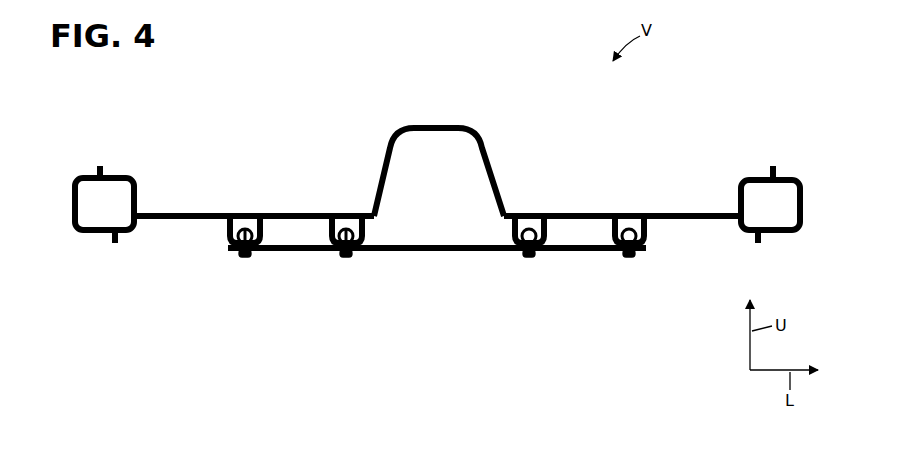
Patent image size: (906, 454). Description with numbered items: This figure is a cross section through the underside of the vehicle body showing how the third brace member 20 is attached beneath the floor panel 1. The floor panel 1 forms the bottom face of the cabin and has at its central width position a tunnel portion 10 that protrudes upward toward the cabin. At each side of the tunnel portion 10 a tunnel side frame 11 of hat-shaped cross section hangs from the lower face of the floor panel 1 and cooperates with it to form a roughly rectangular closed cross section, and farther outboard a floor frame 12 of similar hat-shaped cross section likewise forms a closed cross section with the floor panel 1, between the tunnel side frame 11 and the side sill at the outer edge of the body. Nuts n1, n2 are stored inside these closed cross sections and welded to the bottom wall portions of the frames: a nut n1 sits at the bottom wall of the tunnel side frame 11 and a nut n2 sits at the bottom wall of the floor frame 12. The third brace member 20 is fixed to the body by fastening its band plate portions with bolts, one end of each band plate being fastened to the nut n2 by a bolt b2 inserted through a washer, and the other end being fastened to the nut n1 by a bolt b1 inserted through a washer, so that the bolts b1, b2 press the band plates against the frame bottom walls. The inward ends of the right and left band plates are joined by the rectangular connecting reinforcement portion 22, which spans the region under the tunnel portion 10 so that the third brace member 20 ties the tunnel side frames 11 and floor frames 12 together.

The floor panel 1 is at (701, 212).
The tunnel portion 10 is at (427, 123).
The tunnel side frame 11 is at (512, 232).
The floor frame 12 is at (648, 236).
The third brace member 20 is at (487, 254).
The connecting reinforcement portion 22 is at (413, 252).
The nut n1 is at (346, 229).
The nut n2 is at (246, 229).
The bolt b1 is at (346, 257).
The bolt b2 is at (247, 257).